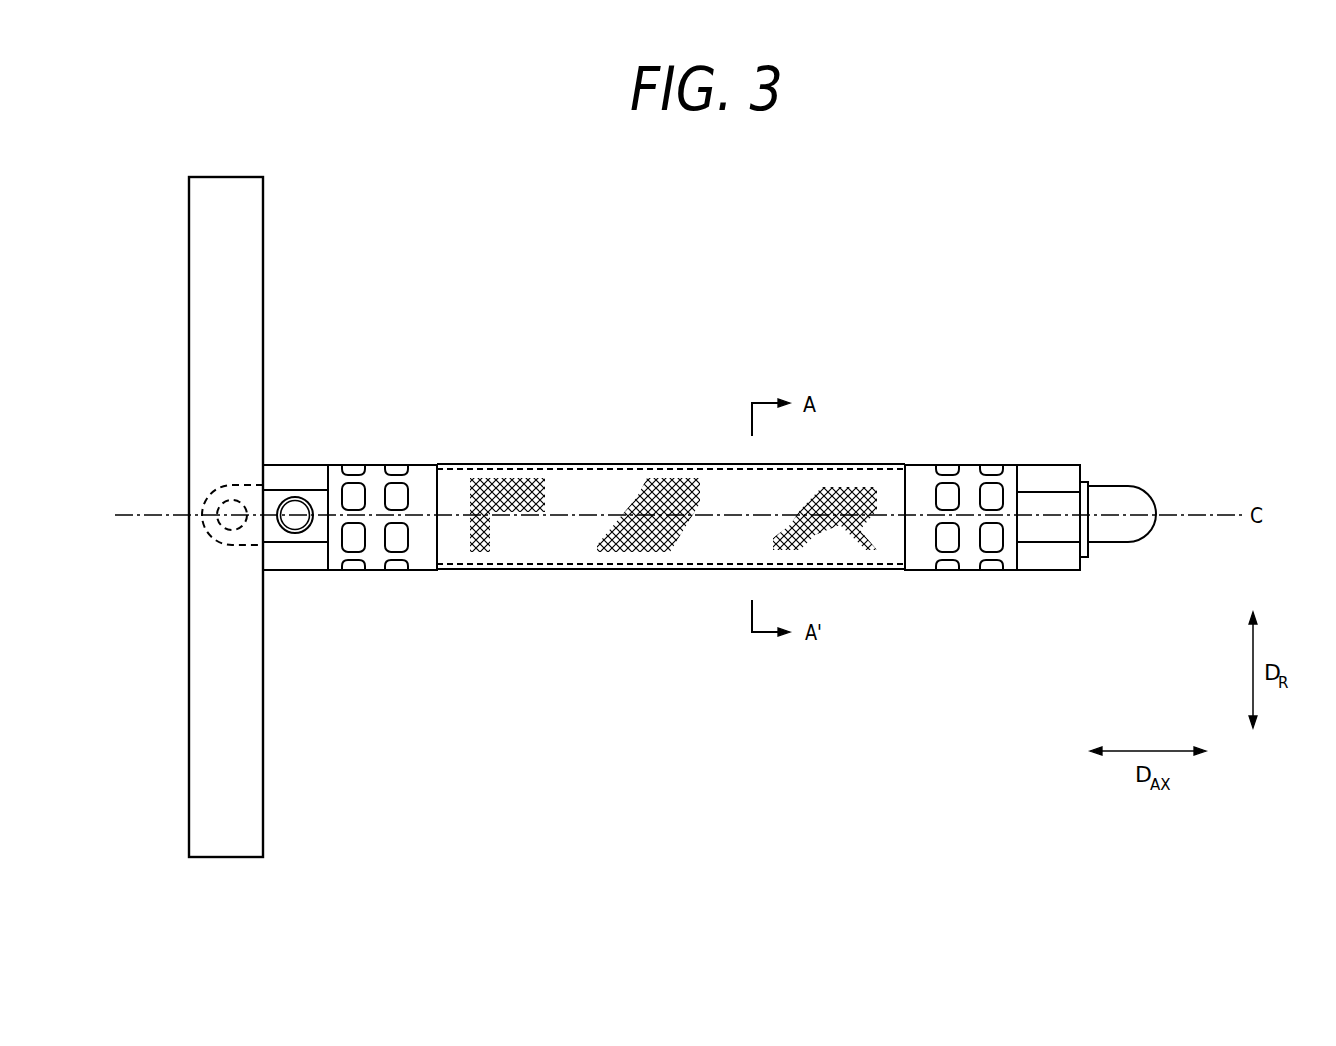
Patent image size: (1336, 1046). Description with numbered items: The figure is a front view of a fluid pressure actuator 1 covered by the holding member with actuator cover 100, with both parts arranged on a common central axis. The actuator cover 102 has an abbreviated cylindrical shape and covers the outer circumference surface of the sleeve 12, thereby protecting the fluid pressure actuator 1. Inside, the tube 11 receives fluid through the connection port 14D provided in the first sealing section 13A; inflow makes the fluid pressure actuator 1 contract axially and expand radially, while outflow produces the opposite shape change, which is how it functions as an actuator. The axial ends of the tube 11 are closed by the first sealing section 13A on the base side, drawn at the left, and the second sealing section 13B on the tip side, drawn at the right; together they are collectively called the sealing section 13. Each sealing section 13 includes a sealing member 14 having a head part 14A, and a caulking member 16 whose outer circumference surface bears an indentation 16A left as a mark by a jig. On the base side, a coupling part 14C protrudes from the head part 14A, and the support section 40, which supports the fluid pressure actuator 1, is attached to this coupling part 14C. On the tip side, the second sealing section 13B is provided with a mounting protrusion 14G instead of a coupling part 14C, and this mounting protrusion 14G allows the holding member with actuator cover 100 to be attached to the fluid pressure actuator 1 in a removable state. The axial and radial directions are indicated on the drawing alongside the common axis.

The fluid pressure actuator 1 is at (654, 520).
The tube 11 is at (597, 482).
The sleeve 12 is at (703, 468).
The sealing section 13 is at (672, 538).
The first sealing section 13A is at (414, 532).
The second sealing section 13B is at (975, 580).
The sealing member 14 is at (654, 524).
The head part 14A is at (316, 478).
The coupling part 14C is at (225, 545).
The connection port 14D is at (296, 520).
The mounting protrusion 14G is at (1120, 545).
The caulking member 16 is at (380, 472).
The indentation 16A is at (400, 497).
The support section 40 is at (227, 688).
The holding member with actuator cover 100 is at (673, 577).
The actuator cover 102 is at (673, 577).